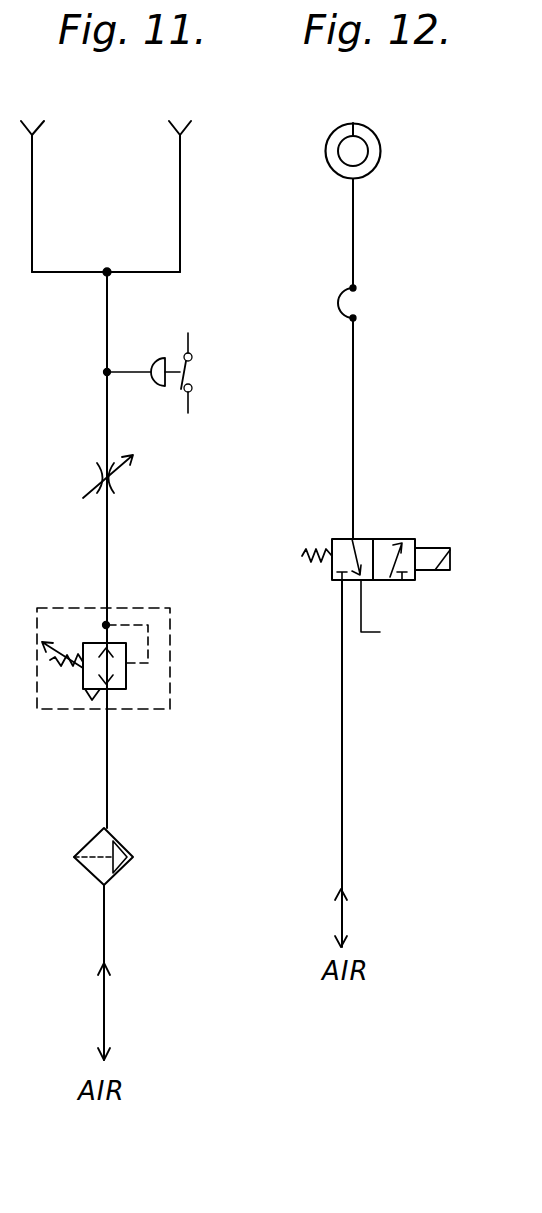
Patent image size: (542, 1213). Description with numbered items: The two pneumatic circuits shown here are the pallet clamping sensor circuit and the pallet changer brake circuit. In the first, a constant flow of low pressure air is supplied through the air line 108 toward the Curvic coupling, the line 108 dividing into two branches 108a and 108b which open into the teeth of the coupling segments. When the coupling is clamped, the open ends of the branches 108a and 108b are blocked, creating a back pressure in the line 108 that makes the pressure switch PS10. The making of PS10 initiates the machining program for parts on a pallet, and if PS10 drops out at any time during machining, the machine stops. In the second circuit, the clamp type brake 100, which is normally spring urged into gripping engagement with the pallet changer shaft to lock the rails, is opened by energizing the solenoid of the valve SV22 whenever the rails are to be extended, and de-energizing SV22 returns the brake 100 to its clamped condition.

In FIG. 11, the air line 108 is at (106, 334).
In FIG. 11, the branch of air line 108a is at (33, 206).
In FIG. 11, the branch of air line 108b is at (180, 210).
In FIG. 11, the pressure switch PS10 is at (171, 355).
In FIG. 12, the clamp type brake 100 is at (381, 157).
In FIG. 12, the solenoid valve SV22 is at (340, 537).